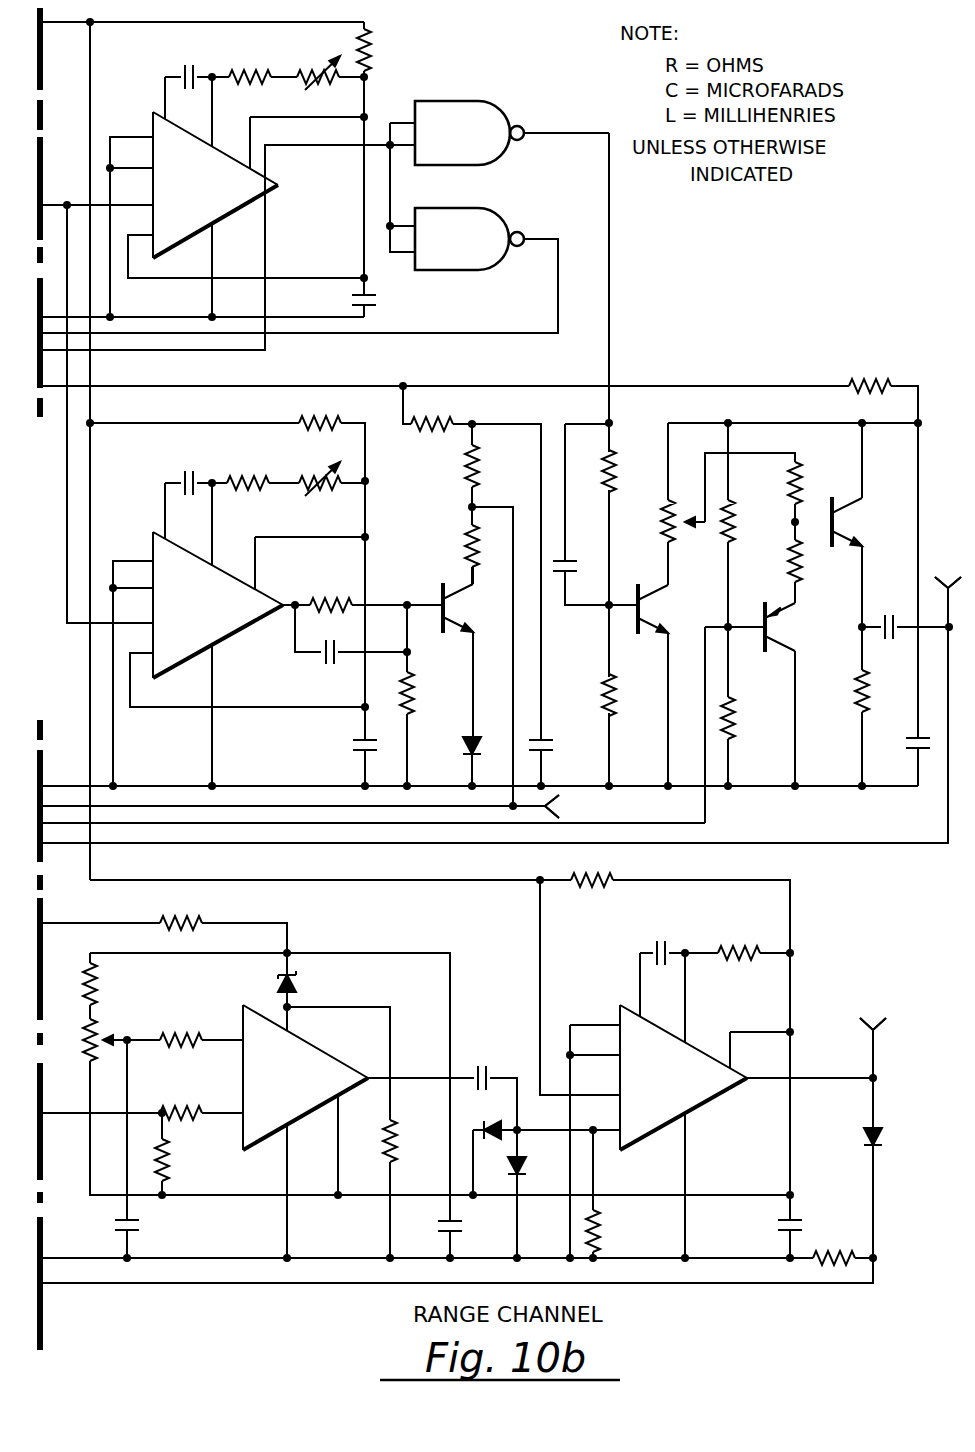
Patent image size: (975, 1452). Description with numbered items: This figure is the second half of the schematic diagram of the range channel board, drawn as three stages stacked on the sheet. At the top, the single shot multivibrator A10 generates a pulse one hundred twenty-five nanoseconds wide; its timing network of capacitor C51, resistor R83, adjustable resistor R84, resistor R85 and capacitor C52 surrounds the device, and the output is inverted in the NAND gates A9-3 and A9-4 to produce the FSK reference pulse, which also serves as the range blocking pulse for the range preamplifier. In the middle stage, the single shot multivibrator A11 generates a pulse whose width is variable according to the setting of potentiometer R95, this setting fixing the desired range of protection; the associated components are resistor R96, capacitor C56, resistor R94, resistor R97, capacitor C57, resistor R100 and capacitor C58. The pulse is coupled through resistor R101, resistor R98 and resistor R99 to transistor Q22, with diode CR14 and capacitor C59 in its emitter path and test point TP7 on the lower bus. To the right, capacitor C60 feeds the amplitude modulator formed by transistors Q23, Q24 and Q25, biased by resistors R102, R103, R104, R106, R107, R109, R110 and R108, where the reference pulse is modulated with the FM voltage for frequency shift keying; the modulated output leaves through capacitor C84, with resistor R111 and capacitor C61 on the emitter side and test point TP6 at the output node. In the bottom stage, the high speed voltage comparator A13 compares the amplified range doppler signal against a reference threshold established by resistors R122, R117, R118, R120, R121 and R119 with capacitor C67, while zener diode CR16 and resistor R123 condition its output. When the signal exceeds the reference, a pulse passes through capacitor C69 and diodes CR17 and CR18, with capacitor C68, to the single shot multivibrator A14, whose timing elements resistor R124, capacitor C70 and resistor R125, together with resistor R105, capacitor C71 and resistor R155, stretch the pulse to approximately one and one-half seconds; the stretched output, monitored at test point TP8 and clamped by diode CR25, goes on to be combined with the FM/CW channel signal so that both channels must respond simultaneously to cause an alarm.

The single shot multivibrator A10 is at (217, 181).
The capacitor C51 is at (166, 60).
The resistor R83 is at (250, 56).
The variable resistor R84 is at (318, 59).
The resistor R85 is at (381, 50).
The capacitor C52 is at (383, 307).
The IC NAND gate A9-3 is at (501, 136).
The IC NAND gate A9-4 is at (476, 243).
The single shot multivibrator A11 is at (222, 601).
The resistor R96 is at (320, 424).
The capacitor C56 is at (175, 466).
The resistor R94 is at (248, 501).
The potentiometer R95 is at (324, 494).
The resistor R97 is at (331, 589).
The capacitor C57 is at (326, 671).
The resistor R100 is at (434, 694).
The capacitor C58 is at (347, 754).
The resistor R101 is at (435, 425).
The resistor R98 is at (491, 467).
The resistor R99 is at (456, 545).
The transistor Q22 is at (468, 608).
The diode CR14 is at (453, 757).
The capacitor C59 is at (559, 755).
The test point TP7 is at (554, 806).
The capacitor C60 is at (582, 544).
The resistor R102 is at (634, 471).
The resistor R103 is at (589, 695).
The transistor Q23 is at (664, 609).
The variable resistor R104 is at (648, 524).
The resistor R106 is at (753, 526).
The resistor R107 is at (753, 719).
The resistor R109 is at (819, 481).
The resistor R110 is at (820, 565).
The transistor Q24 is at (790, 627).
The transistor Q25 is at (858, 522).
The resistor R108 is at (869, 367).
The capacitor C84 is at (888, 606).
The resistor R111 is at (887, 691).
The capacitor C61 is at (901, 755).
The test point TP6 is at (947, 590).
The high speed voltage comparator A13 is at (312, 1077).
The single shot multivibrator A14 is at (693, 1075).
The resistor R122 is at (185, 922).
The resistor R117 is at (114, 984).
The variable resistor R118 is at (87, 1040).
The resistor R120 is at (189, 1023).
The resistor R121 is at (190, 1094).
The resistor R119 is at (187, 1162).
The capacitor C67 is at (148, 1229).
The zener diode CR16 is at (314, 981).
The resistor R123 is at (413, 1142).
The capacitor C69 is at (482, 1059).
The diode CR17 is at (489, 1121).
The diode CR18 is at (537, 1177).
The capacitor C68 is at (468, 1234).
The resistor R124 is at (595, 899).
The capacitor C70 is at (662, 935).
The resistor R125 is at (741, 973).
The resistor R105 is at (617, 1231).
The capacitor C71 is at (773, 1229).
The resistor R155 is at (835, 1243).
The test point TP8 is at (870, 1036).
The diode CR25 is at (899, 1136).